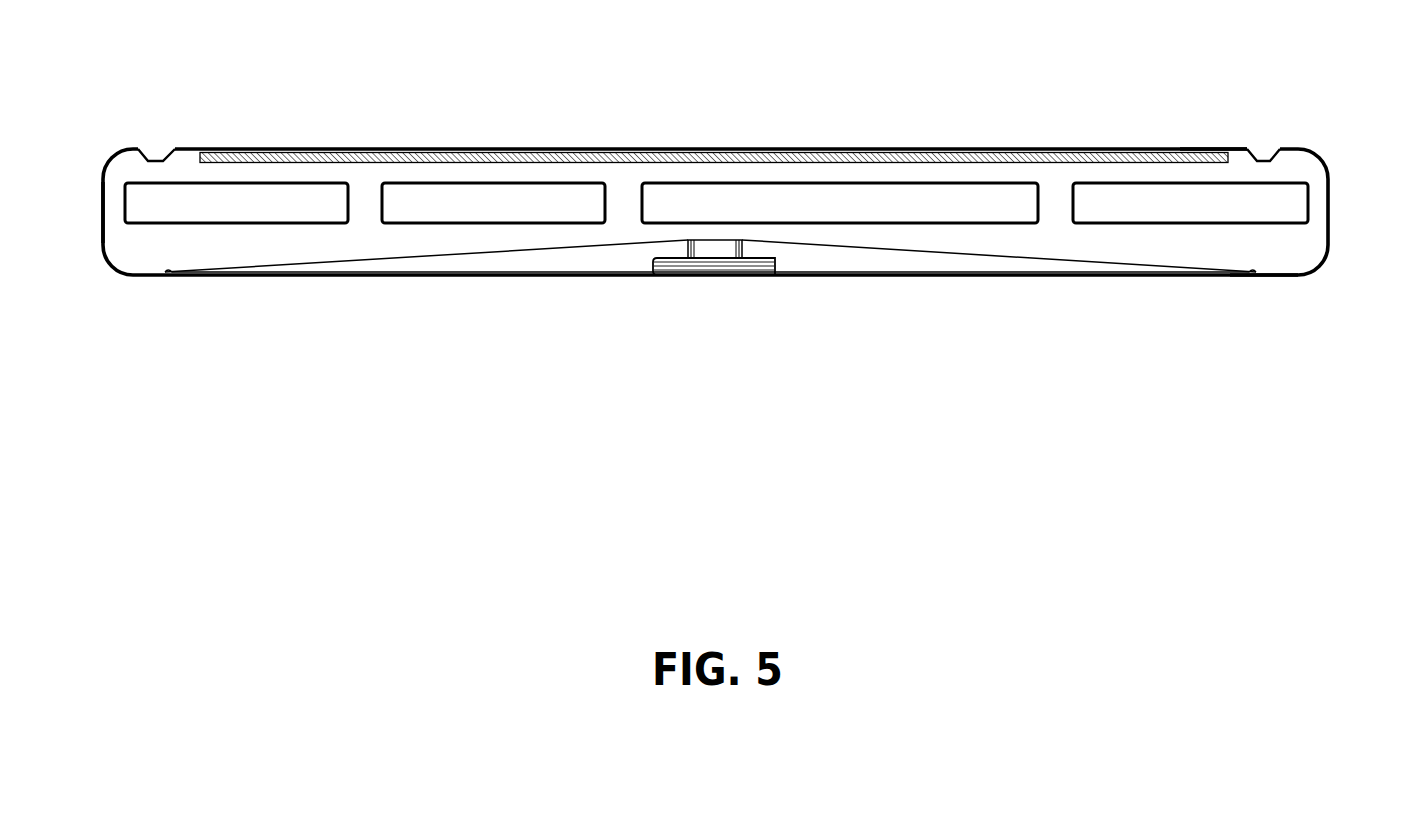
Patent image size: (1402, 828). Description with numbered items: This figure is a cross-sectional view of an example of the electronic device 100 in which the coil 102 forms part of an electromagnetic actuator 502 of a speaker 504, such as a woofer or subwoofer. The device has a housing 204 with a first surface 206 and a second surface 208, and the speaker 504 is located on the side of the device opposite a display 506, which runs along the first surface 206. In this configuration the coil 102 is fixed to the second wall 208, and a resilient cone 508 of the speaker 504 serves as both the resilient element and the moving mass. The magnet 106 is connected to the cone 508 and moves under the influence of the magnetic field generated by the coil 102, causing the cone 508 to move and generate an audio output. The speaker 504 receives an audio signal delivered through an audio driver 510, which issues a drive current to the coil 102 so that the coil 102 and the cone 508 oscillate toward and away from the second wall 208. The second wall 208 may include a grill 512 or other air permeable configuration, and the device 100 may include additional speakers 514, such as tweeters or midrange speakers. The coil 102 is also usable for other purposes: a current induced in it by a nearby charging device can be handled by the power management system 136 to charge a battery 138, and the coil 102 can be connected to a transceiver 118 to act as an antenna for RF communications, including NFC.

The electronic device 100 is at (110, 97).
The coil 102 is at (655, 280).
The magnet 106 is at (742, 250).
The transceiver 118 is at (236, 203).
The power management system 136 is at (840, 203).
The battery 138 is at (1190, 203).
The housing 204 is at (103, 236).
The first surface 206 is at (1232, 147).
The second surface 208 is at (1277, 279).
The electromagnetic actuator 502 is at (668, 313).
The speaker 504 is at (495, 326).
The display 506 is at (376, 149).
The resilient cone 508 is at (1016, 259).
The audio driver 510 is at (493, 203).
The grill 512 is at (890, 279).
The additional speakers 514 is at (138, 153).